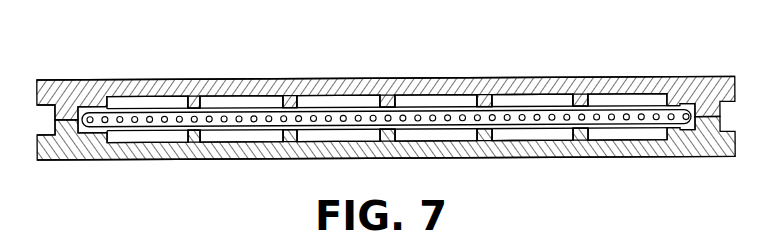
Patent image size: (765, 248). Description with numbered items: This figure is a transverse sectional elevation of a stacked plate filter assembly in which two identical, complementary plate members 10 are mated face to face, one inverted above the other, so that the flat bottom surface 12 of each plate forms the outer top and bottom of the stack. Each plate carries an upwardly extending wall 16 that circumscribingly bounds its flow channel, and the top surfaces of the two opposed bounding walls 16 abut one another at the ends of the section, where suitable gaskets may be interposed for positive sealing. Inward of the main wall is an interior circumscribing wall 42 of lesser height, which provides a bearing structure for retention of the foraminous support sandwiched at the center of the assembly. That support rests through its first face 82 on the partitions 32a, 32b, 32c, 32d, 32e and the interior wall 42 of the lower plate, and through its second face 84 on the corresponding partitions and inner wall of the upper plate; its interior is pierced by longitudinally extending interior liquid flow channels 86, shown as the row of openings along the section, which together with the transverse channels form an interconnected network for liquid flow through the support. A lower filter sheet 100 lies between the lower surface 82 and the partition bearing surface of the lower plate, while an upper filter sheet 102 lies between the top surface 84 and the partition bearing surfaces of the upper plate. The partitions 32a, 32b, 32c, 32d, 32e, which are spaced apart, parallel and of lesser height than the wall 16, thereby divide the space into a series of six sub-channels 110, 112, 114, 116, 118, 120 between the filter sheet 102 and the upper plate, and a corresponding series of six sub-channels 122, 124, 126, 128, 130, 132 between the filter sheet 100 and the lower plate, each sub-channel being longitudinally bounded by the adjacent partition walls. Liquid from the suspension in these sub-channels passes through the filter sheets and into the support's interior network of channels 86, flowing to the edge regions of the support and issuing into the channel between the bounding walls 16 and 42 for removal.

The plate member 10 is at (66, 108).
The bottom surface 12 is at (265, 88).
The wall 16 is at (62, 110).
The interior circumscribing wall 42 is at (95, 108).
The first face 82 is at (540, 132).
The second face 84 is at (459, 108).
The longitudinally extending interior liquid flow channels 86 is at (460, 134).
The lower filter sheet 100 is at (258, 140).
The upper filter sheet 102 is at (340, 108).
The sub-channel 110 is at (145, 100).
The sub-channel 112 is at (240, 100).
The sub-channel 114 is at (358, 100).
The sub-channel 116 is at (466, 100).
The sub-channel 118 is at (543, 100).
The sub-channel 120 is at (642, 100).
The sub-channel 122 is at (155, 140).
The sub-channel 124 is at (235, 140).
The sub-channel 126 is at (357, 140).
The sub-channel 128 is at (478, 137).
The sub-channel 130 is at (557, 140).
The sub-channel 132 is at (647, 140).
The partition 32a is at (193, 104).
The partition 32b is at (291, 104).
The partition 32c is at (388, 104).
The partition 32d is at (485, 104).
The partition 32e is at (585, 104).